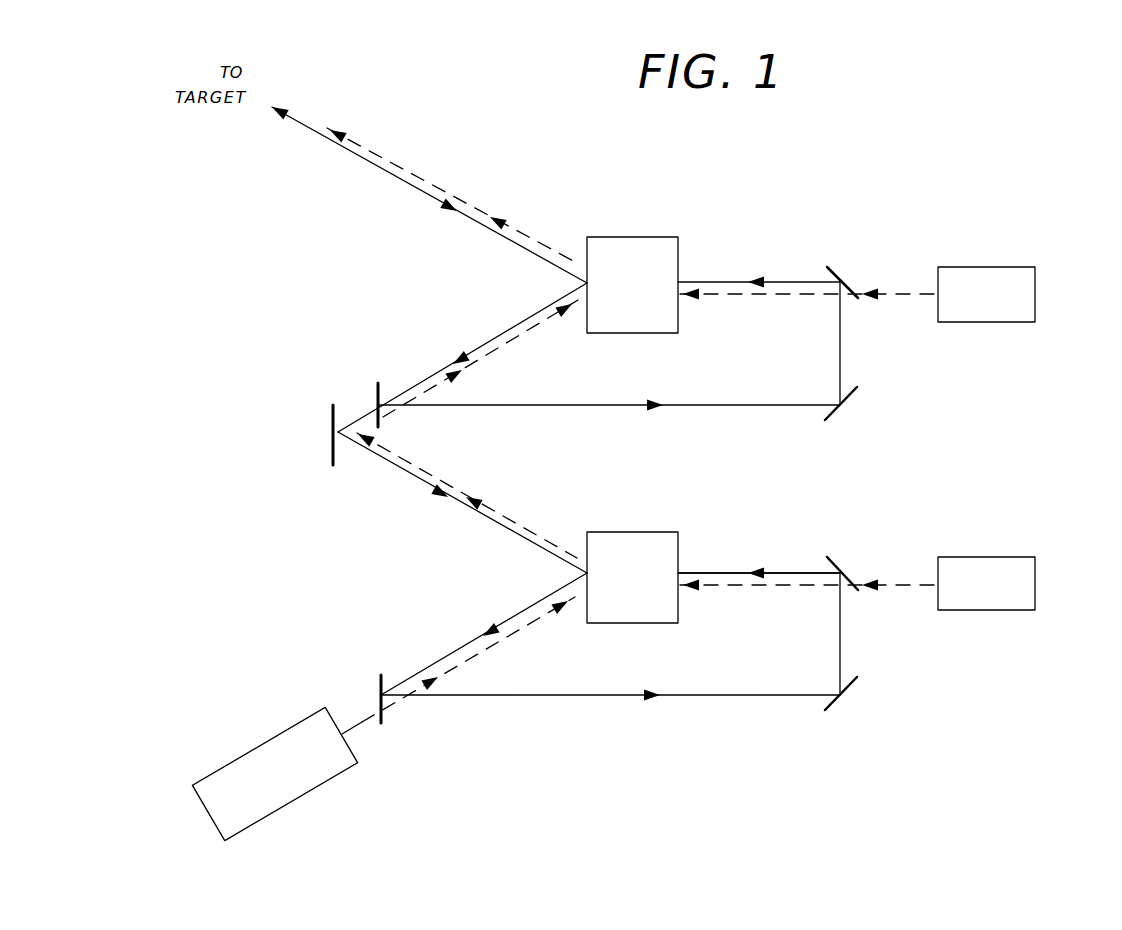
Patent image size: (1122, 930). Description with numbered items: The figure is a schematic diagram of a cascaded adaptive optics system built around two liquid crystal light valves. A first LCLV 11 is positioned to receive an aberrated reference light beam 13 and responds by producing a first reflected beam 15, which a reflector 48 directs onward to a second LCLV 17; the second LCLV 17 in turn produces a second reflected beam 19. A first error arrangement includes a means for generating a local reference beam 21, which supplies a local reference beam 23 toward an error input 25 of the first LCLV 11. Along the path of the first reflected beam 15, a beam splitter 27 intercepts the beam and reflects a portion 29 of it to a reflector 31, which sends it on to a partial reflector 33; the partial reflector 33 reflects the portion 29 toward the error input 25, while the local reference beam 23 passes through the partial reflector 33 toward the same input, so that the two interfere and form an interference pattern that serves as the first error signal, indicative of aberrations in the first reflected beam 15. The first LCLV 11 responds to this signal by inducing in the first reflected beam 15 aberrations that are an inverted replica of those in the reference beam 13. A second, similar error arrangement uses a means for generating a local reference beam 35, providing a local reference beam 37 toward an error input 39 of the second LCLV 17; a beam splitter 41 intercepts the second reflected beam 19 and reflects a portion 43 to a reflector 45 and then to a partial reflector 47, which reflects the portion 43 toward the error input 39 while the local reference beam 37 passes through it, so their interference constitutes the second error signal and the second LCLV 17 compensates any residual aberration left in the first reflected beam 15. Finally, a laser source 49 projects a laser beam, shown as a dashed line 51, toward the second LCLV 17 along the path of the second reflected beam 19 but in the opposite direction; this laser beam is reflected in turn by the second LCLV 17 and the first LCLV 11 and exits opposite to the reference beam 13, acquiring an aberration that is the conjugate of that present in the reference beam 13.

The first LCLV 11 is at (652, 237).
The aberrated reference light beam 13 is at (408, 188).
The first reflected beam 15 is at (486, 345).
The second LCLV 17 is at (637, 532).
The second reflected beam 19 is at (462, 652).
The means for generating a local reference beam 21 is at (1035, 285).
The local reference beam 23 is at (897, 295).
The error input 25 is at (686, 272).
The beam splitter 27 is at (376, 388).
The portion 29 is at (686, 404).
The reflector 31 is at (855, 389).
The partial reflector 33 is at (840, 272).
The means for generating a local reference beam 35 is at (1035, 585).
The local reference beam 37 is at (923, 590).
The error input 39 is at (686, 562).
The beam splitter 41 is at (380, 676).
The portion 43 is at (591, 696).
The reflector 45 is at (854, 687).
The partial reflector 47 is at (840, 560).
The reflector 48 is at (333, 453).
The laser source 49 is at (294, 800).
The dashed line 51 is at (347, 728).